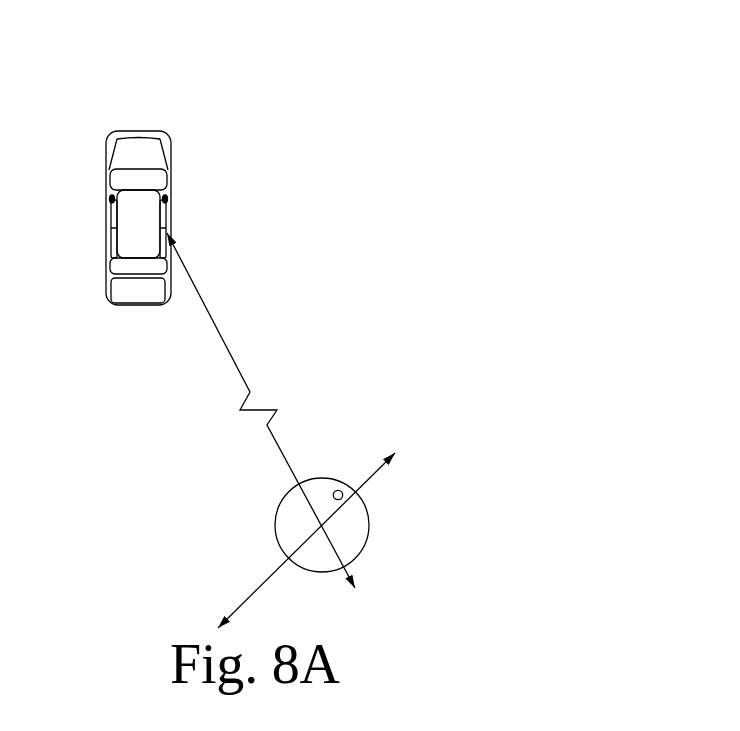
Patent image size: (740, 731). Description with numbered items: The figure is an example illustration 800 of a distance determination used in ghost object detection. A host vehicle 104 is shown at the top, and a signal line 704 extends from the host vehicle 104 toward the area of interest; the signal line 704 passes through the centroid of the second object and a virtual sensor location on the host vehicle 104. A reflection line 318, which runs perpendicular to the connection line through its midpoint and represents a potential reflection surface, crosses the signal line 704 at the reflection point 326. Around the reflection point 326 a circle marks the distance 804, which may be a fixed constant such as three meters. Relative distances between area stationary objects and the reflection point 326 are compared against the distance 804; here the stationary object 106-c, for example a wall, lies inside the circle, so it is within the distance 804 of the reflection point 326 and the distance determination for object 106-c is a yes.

The example illustration 800 is at (592, 50).
The host vehicle 104 is at (105, 153).
The signal line 704 is at (217, 328).
The distance 804 is at (275, 522).
The reflection line 318 is at (381, 467).
The object 106-c is at (343, 495).
The reflection point 326 is at (322, 525).